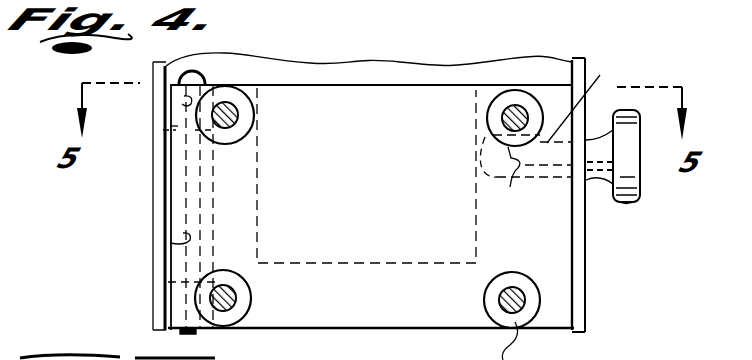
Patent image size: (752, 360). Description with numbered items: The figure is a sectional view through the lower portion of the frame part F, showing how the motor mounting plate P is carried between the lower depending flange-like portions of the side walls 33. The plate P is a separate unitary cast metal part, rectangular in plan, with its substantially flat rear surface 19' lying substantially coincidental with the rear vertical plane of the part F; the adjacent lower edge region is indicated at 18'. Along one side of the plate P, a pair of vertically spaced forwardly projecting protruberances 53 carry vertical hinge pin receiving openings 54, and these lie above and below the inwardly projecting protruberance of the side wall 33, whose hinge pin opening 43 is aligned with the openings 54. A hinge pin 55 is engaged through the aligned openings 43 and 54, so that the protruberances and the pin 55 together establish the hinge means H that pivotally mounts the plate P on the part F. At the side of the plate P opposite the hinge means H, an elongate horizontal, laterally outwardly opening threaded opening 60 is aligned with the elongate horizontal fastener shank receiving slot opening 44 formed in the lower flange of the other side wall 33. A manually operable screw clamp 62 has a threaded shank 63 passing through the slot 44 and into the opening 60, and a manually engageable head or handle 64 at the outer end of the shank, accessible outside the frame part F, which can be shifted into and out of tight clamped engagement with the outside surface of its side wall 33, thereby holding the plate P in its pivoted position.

The side wall 33 is at (152, 203).
The rear surface 19' is at (369, 191).
The bottom flange 18' is at (371, 341).
The motor mounting plate P is at (366, 175).
The hinge pin 55 is at (205, 74).
The hinge pin receiving opening 54 is at (186, 96).
The protruberance 53 is at (177, 122).
The frame part F is at (135, 234).
The hinge pin opening 43 is at (185, 243).
The hinge means H is at (145, 305).
The threaded opening 60 is at (510, 187).
The threaded shank 63 is at (600, 75).
The screw clamp 62 is at (657, 163).
The fastener shank receiving slot opening 44 is at (578, 167).
The head or handle 64 is at (628, 205).